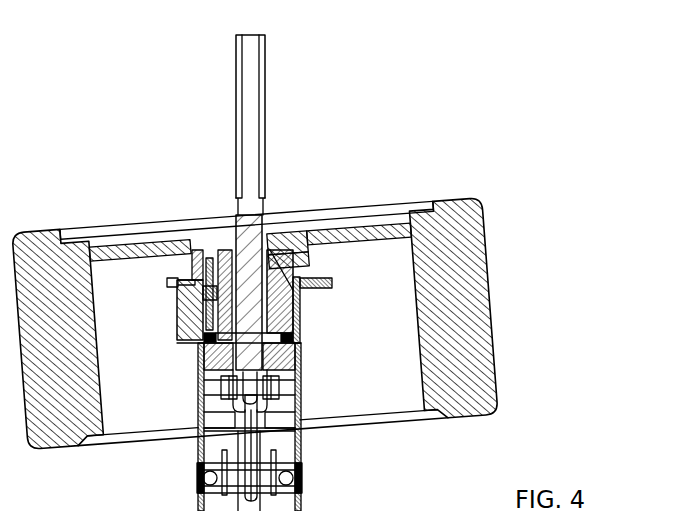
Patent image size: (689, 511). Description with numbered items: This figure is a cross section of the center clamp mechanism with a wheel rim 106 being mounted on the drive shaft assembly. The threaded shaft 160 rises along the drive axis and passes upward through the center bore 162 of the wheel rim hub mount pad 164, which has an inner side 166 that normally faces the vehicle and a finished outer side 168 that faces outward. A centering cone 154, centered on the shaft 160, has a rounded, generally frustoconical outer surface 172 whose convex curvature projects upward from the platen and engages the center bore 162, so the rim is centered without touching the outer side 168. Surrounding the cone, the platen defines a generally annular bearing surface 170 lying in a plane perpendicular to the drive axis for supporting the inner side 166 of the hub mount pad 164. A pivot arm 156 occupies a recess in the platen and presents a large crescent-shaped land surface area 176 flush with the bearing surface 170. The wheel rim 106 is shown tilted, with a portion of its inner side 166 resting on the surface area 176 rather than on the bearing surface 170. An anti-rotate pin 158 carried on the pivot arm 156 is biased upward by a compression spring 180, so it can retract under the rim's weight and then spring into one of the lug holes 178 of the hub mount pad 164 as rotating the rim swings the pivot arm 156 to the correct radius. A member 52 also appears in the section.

The support member 52 is at (329, 291).
The wheel rim 106 is at (388, 200).
The centering cone 154 is at (287, 302).
The pivot arm 156 is at (173, 279).
The anti-rotate pin 158 is at (190, 292).
The threaded shaft 160 is at (270, 49).
The center bore 162 is at (277, 247).
The wheel rim hub mount pad 164 is at (342, 243).
The inner side 166 is at (322, 267).
The outer side 168 is at (296, 236).
The bearing surface 170 is at (340, 275).
The outer surface 172 is at (305, 300).
The surface area 176 is at (195, 272).
The lug holes 178 is at (208, 250).
The compression spring 180 is at (185, 338).